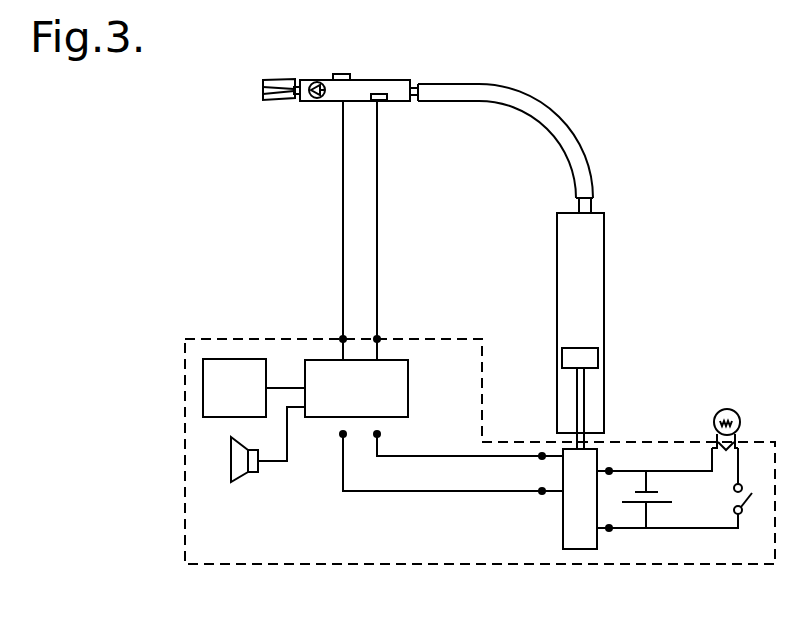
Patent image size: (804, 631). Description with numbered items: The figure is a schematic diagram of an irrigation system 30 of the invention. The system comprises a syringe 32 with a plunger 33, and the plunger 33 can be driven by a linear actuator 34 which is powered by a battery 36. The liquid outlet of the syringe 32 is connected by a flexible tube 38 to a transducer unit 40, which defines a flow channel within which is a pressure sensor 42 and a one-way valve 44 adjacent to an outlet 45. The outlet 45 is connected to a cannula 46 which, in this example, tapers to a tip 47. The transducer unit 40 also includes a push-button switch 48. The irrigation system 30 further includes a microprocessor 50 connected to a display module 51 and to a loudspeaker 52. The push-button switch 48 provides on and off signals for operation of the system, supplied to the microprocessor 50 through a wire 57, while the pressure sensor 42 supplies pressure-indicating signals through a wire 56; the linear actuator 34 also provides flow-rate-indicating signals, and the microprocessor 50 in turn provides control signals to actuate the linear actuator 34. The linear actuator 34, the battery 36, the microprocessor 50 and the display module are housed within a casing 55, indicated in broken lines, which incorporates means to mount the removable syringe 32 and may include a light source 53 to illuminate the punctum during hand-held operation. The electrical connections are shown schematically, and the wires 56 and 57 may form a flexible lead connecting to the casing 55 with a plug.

The irrigation system 30 is at (680, 266).
The syringe 32 is at (598, 318).
The plunger 33 is at (593, 366).
The linear actuator 34 is at (575, 535).
The battery 36 is at (658, 503).
The flexible tube 38 is at (550, 123).
The transducer unit 40 is at (379, 78).
The pressure sensor 42 is at (383, 102).
The one-way valve 44 is at (317, 83).
The outlet 45 is at (298, 97).
The cannula 46 is at (273, 80).
The tip 47 is at (265, 100).
The push-button switch 48 is at (342, 74).
The microprocessor 50 is at (397, 400).
The display module 51 is at (242, 467).
The loudspeaker 52 is at (235, 368).
The light source 53 is at (736, 410).
The casing 55 is at (185, 490).
The wire 56 is at (377, 240).
The wire 57 is at (343, 243).